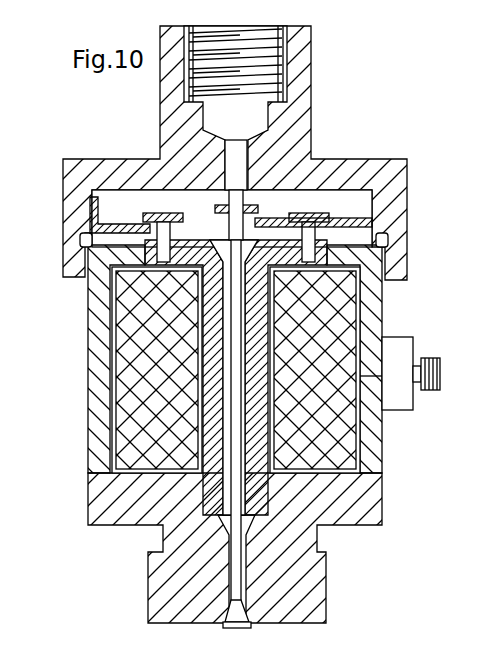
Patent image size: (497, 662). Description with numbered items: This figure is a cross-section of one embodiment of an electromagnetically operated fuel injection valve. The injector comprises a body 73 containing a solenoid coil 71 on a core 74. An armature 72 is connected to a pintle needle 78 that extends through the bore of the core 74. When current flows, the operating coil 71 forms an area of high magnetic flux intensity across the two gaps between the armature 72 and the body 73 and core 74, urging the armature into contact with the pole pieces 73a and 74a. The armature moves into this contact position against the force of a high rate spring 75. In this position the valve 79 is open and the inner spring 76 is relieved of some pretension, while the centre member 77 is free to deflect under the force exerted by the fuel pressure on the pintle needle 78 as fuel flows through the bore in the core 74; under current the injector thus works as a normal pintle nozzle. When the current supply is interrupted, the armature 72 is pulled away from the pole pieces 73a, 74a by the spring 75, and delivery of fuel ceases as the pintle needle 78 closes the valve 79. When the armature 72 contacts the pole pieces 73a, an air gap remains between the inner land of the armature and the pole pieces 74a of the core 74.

The solenoid coil 71 is at (132, 383).
The armature 72 is at (318, 225).
The body 73 is at (370, 258).
The pole piece 73a is at (86, 250).
The core 74 is at (262, 455).
The pole piece 74a is at (174, 237).
The high rate spring 75 is at (116, 224).
The inner spring 76 is at (272, 219).
The centre member 77 is at (225, 212).
The pintle needle 78 is at (238, 575).
The valve 79 is at (220, 620).